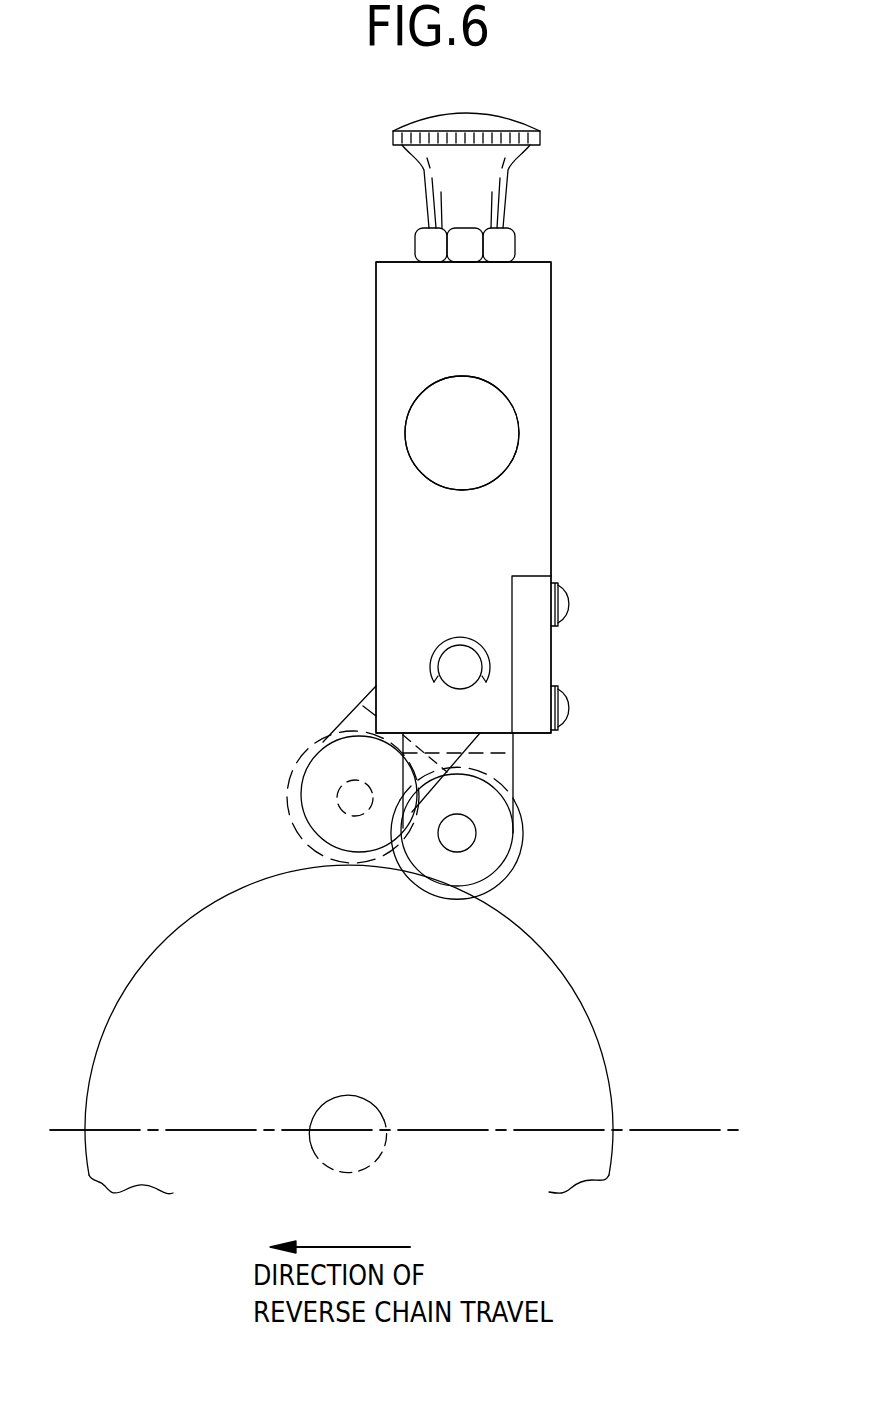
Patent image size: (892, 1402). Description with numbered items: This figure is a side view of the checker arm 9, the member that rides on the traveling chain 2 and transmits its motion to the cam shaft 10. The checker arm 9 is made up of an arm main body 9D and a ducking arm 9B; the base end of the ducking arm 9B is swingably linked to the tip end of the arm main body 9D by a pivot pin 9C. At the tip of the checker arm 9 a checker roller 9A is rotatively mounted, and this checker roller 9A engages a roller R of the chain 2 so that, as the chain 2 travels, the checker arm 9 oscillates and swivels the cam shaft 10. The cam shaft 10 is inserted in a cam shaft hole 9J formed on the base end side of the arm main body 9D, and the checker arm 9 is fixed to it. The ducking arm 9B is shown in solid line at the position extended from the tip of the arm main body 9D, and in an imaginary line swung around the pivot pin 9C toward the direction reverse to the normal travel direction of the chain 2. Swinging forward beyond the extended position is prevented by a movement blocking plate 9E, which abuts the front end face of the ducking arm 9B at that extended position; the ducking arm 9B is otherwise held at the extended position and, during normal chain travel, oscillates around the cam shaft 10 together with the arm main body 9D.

The checker arm 9 is at (560, 492).
The checker roller 9A is at (519, 887).
The ducking arm 9B is at (513, 780).
The pivot pin 9C is at (450, 670).
The arm main body 9D is at (383, 545).
The movement blocking plate 9E is at (535, 657).
The cam shaft hole 9J is at (519, 443).
The cam shaft 10 is at (500, 406).
The roller R is at (585, 1003).
The chain 2 is at (707, 1130).